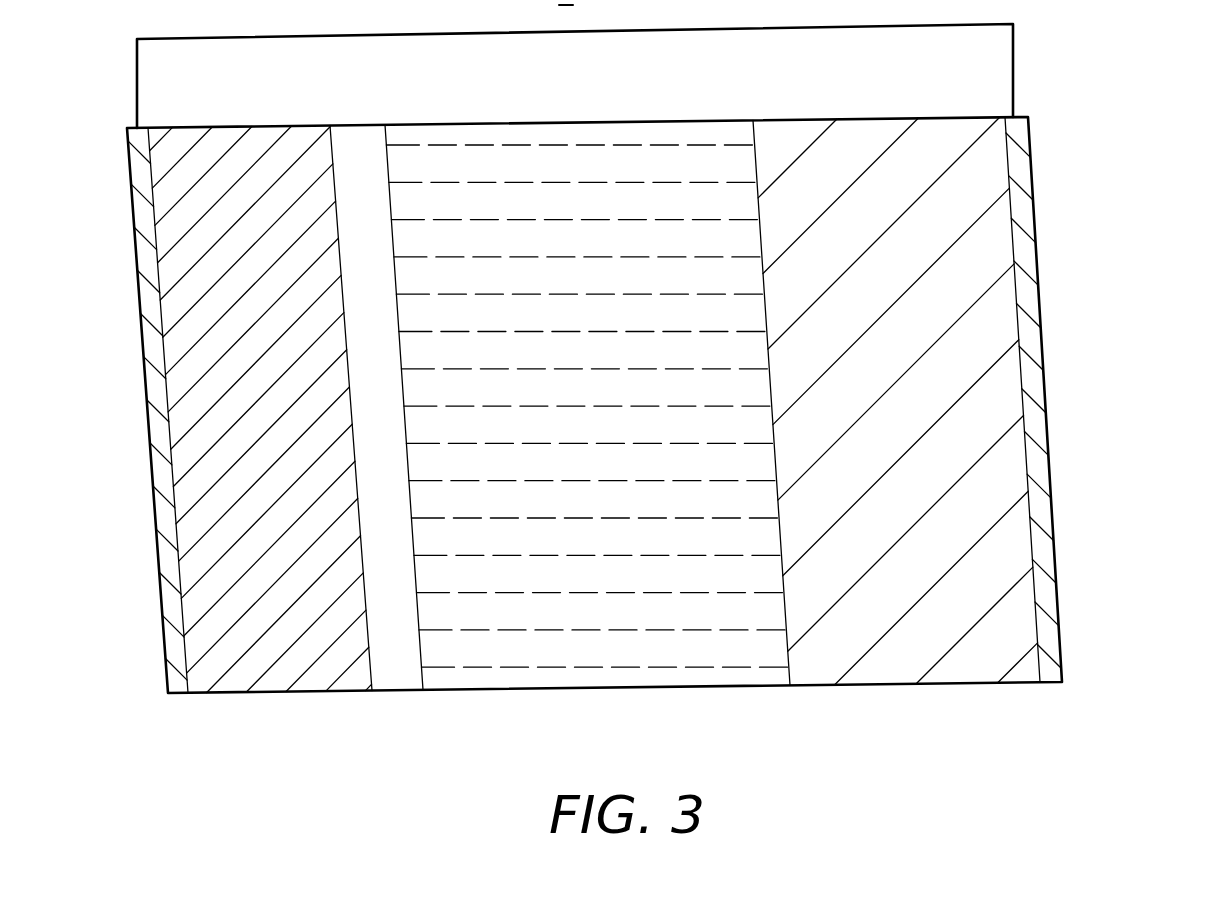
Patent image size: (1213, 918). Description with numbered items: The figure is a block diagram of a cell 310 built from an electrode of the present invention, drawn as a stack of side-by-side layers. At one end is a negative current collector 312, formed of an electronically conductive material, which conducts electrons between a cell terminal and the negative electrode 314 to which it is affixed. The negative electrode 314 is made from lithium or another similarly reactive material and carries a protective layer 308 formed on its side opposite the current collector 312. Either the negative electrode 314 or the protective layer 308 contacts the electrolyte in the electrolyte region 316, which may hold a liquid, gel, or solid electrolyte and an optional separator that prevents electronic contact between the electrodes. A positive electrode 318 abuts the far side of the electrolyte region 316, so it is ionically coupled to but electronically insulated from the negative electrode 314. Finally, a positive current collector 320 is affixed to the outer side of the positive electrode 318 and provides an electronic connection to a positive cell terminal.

The cell 310 is at (1102, 207).
The negative current collector 312 is at (173, 637).
The negative electrode 314 is at (275, 680).
The protective layer 308 is at (395, 678).
The electrolyte region 316 is at (632, 675).
The positive electrode 318 is at (913, 668).
The positive current collector 320 is at (1042, 468).